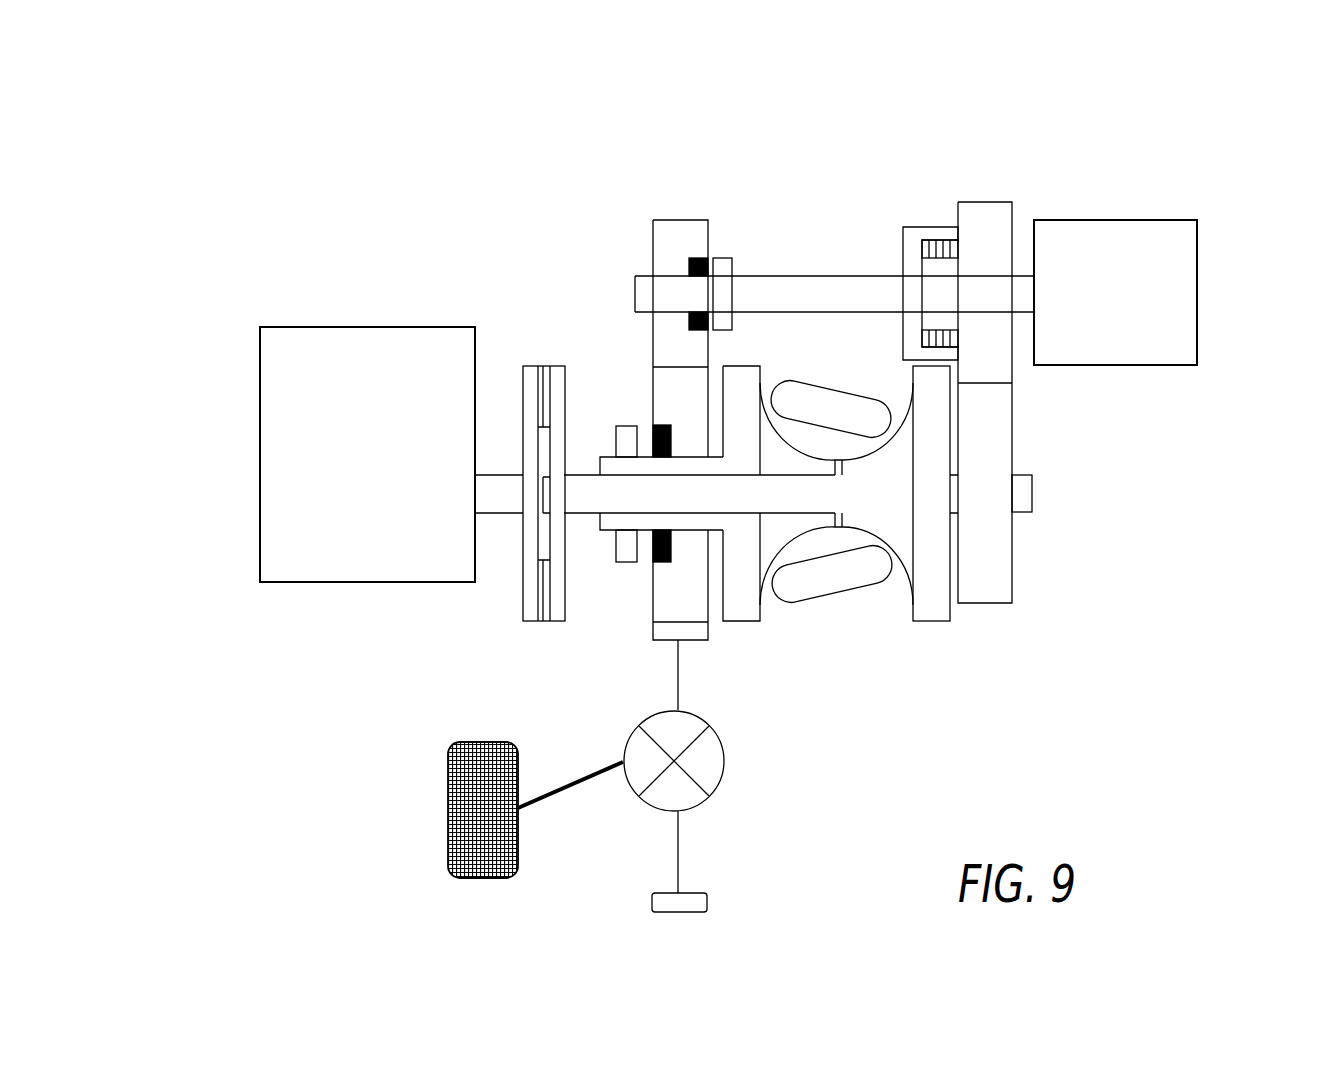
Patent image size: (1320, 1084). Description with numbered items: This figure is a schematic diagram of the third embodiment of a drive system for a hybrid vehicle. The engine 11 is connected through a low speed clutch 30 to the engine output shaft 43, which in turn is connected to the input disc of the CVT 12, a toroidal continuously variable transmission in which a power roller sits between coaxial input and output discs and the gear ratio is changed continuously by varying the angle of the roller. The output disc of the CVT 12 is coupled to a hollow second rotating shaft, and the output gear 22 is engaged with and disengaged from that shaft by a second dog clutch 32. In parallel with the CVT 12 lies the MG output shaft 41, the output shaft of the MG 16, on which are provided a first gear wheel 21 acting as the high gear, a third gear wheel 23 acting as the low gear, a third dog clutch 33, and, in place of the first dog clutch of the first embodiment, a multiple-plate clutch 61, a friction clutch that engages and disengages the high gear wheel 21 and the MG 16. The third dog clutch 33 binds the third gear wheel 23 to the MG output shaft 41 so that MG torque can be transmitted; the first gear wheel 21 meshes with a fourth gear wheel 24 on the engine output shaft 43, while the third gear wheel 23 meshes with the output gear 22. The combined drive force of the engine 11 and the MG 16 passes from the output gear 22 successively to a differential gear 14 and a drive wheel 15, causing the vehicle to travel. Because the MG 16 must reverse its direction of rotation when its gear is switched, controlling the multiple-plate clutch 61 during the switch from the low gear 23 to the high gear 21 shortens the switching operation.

The engine 11 is at (293, 568).
The low speed clutch 30 is at (533, 373).
The second dog clutch 32 is at (623, 427).
The third gear wheel 23 is at (662, 232).
The output gear 22 is at (670, 602).
The third dog clutch 33 is at (720, 273).
The MG output shaft 41 is at (832, 283).
The multiple-plate clutch 61 is at (908, 240).
The first gear wheel 21 is at (985, 210).
The MG 16 is at (1170, 347).
The CVT 12 is at (950, 650).
The fourth gear wheel 24 is at (992, 583).
The engine output shaft 43 is at (1030, 493).
The differential gear 14 is at (638, 778).
The drive wheel 15 is at (453, 872).